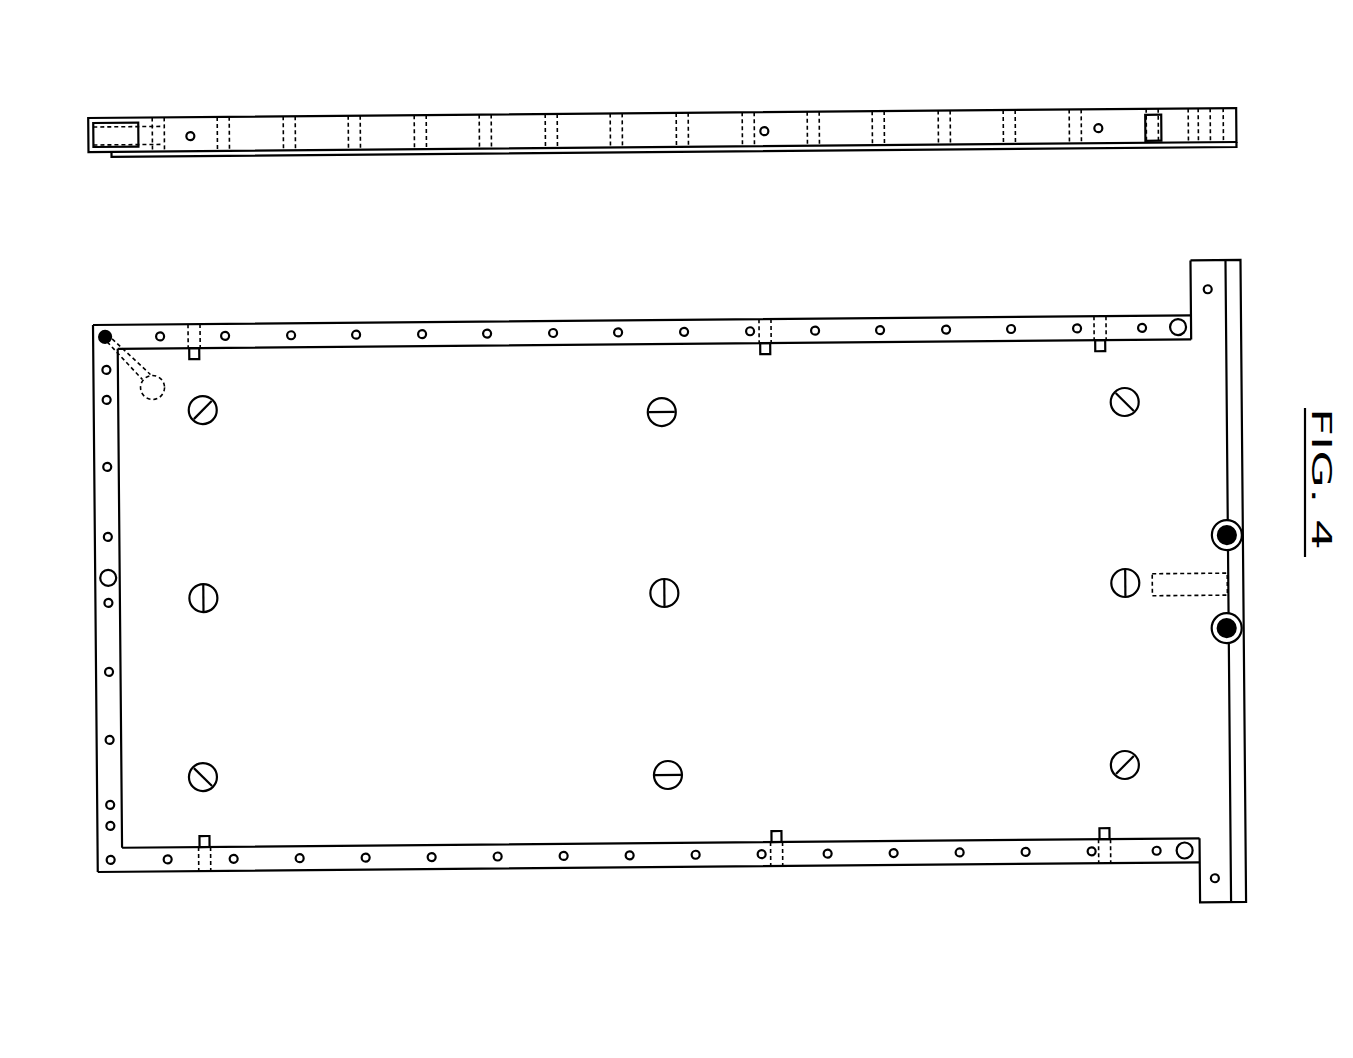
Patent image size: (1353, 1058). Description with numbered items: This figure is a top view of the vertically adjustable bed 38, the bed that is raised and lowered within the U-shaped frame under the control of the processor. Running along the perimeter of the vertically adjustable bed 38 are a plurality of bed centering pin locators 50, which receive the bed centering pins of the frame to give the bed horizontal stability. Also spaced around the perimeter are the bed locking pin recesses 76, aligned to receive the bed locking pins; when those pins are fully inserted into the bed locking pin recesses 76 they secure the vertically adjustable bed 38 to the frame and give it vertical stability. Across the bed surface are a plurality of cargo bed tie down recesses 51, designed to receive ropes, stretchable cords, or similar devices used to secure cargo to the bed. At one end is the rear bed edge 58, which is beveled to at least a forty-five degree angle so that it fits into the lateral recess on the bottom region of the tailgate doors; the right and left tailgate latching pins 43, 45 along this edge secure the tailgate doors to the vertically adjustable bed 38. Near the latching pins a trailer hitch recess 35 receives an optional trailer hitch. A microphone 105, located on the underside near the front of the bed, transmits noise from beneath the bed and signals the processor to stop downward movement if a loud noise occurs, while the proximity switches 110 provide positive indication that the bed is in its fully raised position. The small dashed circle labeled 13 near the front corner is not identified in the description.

The vertically adjustable bed 38 is at (328, 116).
The bed centering pin locators 50 is at (555, 152).
The bed locking pin recesses 76 is at (193, 143).
The cargo bed tie down recesses 51 is at (216, 136).
The proximity switch 110 is at (1178, 318).
The microphone 105 is at (158, 140).
The hinge 13 is at (152, 391).
The rear bed edge 58 is at (1243, 288).
The right tailgate latching pin 43 is at (1237, 119).
The left tailgate latching pin 45 is at (1212, 632).
The trailer hitch recess 35 is at (1176, 602).